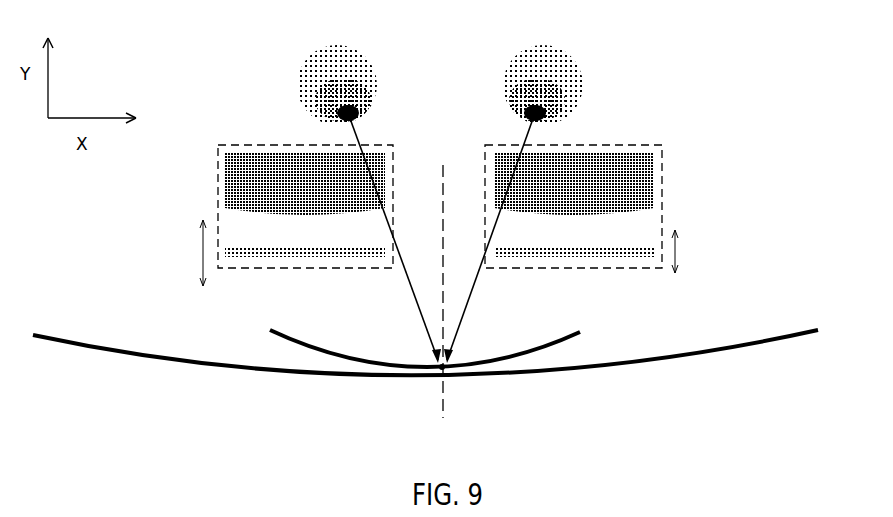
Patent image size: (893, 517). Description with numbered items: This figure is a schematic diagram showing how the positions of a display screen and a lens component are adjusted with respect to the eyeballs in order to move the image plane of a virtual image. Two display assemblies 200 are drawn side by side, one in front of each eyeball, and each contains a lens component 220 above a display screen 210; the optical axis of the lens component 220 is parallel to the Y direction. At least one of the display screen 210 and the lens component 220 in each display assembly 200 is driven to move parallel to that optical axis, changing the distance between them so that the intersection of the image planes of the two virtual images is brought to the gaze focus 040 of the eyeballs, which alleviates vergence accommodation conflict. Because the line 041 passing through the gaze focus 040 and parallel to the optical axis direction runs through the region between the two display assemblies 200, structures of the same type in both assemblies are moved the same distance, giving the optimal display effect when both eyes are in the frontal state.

The display assembly 200 is at (272, 268).
The lens component 220 is at (290, 180).
The display screen 210 is at (290, 247).
The line 041 is at (443, 333).
The gaze focus 040 is at (440, 370).